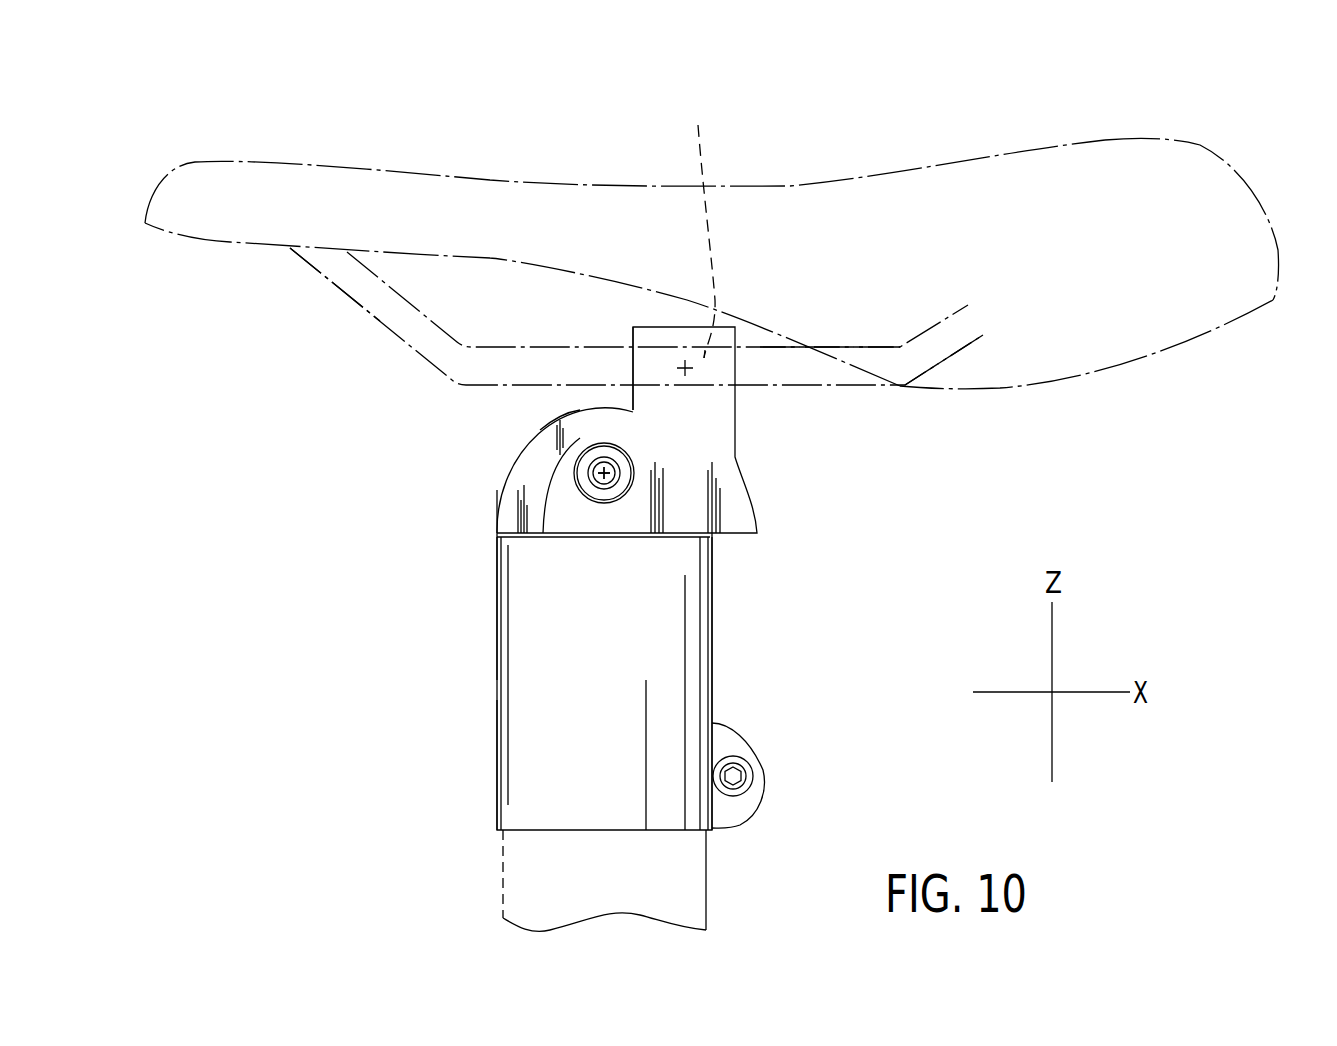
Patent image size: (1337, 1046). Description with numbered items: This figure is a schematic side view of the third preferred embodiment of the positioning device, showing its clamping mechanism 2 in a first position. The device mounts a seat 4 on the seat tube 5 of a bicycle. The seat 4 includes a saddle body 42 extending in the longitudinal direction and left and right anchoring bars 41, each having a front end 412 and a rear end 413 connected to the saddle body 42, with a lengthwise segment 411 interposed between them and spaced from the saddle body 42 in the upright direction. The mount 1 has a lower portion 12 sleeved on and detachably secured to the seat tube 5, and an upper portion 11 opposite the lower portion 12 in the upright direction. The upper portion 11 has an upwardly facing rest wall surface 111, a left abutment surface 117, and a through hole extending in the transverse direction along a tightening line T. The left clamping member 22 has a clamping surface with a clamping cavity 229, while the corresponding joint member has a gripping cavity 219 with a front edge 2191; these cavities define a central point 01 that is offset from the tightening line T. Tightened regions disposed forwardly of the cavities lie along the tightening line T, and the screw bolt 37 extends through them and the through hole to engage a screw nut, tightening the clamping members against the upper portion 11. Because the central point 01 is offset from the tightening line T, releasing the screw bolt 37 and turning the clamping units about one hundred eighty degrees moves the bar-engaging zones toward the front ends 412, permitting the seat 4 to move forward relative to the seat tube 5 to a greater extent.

The mount 1 is at (493, 673).
The clamping mechanism 2 is at (662, 324).
The seat 4 is at (790, 184).
The seat tube 5 is at (503, 880).
The upper portion 11 is at (493, 572).
The lower portion 12 is at (493, 802).
The left clamping member 22 is at (740, 540).
The screw bolt 37 is at (577, 463).
The anchoring bar 41 is at (869, 389).
The saddle body 42 is at (1105, 140).
The rest wall surface 111 is at (522, 517).
The left abutment surface 117 is at (575, 418).
The left gripping cavity 219 is at (704, 354).
The left clamping cavity 229 is at (696, 223).
The lengthwise segment 411 is at (803, 370).
The front end 412 is at (372, 298).
The rear end 413 is at (945, 343).
The front edge 2191 is at (633, 368).
The central point 01 is at (688, 372).
The tightening line T is at (602, 475).